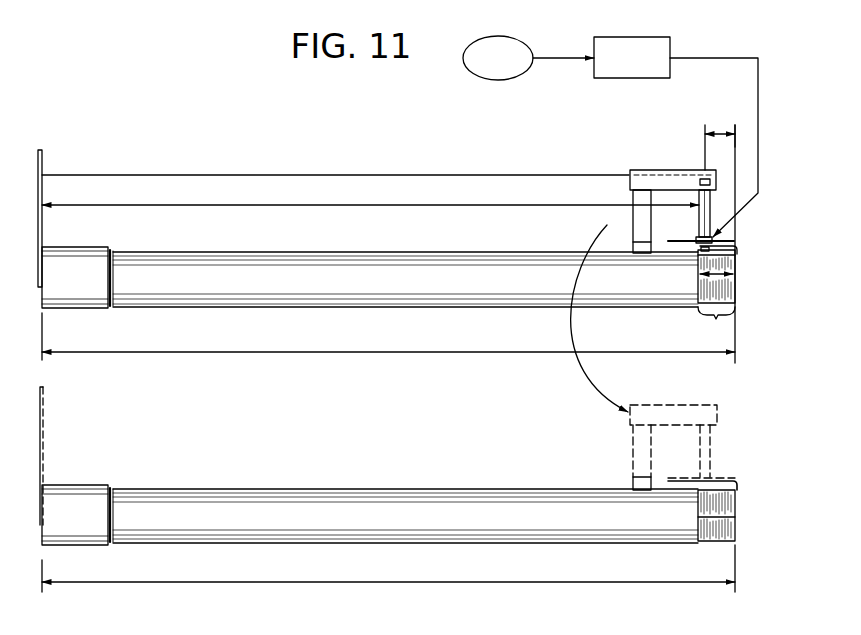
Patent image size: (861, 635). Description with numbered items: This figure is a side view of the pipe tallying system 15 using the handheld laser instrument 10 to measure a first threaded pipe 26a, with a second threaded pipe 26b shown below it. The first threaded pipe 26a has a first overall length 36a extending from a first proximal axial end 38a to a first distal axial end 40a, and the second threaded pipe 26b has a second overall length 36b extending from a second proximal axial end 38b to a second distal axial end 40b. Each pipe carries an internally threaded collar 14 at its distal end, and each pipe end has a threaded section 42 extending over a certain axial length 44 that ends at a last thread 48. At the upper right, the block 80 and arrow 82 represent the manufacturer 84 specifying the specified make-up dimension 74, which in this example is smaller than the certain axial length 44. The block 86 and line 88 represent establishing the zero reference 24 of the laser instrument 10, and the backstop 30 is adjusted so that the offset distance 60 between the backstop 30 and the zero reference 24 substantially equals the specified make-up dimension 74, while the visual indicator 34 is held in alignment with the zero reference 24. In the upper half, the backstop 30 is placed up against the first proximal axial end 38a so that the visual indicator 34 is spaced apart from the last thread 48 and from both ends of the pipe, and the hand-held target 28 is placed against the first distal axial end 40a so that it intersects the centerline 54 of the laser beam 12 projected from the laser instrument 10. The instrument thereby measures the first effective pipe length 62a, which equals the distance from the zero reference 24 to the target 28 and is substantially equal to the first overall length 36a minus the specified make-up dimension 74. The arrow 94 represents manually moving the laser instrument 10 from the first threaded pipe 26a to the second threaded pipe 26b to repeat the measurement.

The laser instrument 10 is at (632, 128).
The laser beam 12 is at (235, 175).
The collar 14 is at (66, 247).
The pipe tallying system 15 is at (106, 112).
The zero reference 24 is at (700, 219).
The first threaded pipe 26a is at (86, 247).
The second threaded pipe 26b is at (80, 485).
The target 28 is at (43, 180).
The backstop 30 is at (738, 247).
The visual indicator 34 is at (700, 244).
The first overall length 36a is at (312, 352).
The second overall length 36b is at (287, 582).
The first proximal axial end 38a is at (738, 288).
The second proximal axial end 38b is at (737, 525).
The first distal axial end 40a is at (39, 292).
The second distal axial end 40b is at (39, 530).
The threaded section 42 is at (716, 298).
The certain axial length 44 is at (718, 265).
The last thread 48 is at (693, 290).
The centerline 54 is at (330, 174).
The offset distance 60 is at (720, 128).
The first effective pipe length 62a is at (473, 205).
The specified make-up dimension 74 is at (717, 127).
The block 80 is at (672, 52).
The arrow 82 is at (553, 60).
The manufacturer 84 is at (473, 72).
The block 86 is at (698, 182).
The line 88 is at (648, 170).
The arrow 94 is at (590, 380).